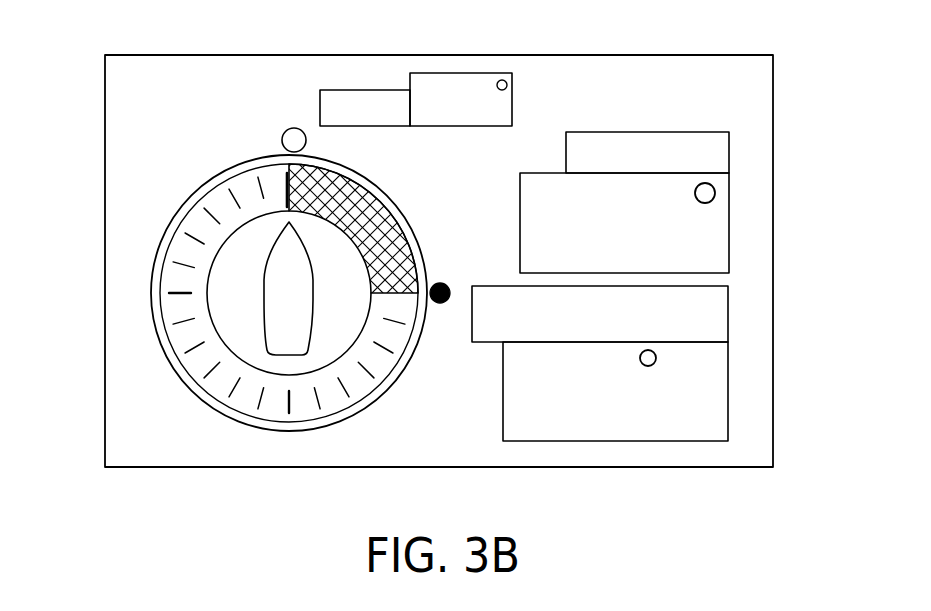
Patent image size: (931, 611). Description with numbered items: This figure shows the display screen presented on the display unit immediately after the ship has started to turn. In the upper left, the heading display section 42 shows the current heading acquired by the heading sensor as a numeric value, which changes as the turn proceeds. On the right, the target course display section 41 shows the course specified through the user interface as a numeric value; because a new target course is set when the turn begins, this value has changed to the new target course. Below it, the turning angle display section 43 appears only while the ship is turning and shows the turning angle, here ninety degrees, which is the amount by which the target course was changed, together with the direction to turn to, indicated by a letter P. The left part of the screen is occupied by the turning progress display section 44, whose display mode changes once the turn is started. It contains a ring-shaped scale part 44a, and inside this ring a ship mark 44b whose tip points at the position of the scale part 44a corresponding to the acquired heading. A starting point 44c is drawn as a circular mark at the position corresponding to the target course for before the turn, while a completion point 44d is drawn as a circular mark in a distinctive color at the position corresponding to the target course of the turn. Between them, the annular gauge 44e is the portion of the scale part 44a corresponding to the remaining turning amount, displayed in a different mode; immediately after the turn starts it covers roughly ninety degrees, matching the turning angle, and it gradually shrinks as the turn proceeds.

The target course display section 41 is at (648, 130).
The heading display section 42 is at (412, 70).
The turning angle display section 43 is at (620, 444).
The turning progress display section 44 is at (213, 124).
The scale part 44a is at (358, 383).
The ship mark 44b is at (277, 258).
The starting point 44c is at (287, 130).
The completion point 44d is at (440, 283).
The annular gauge 44e is at (362, 176).